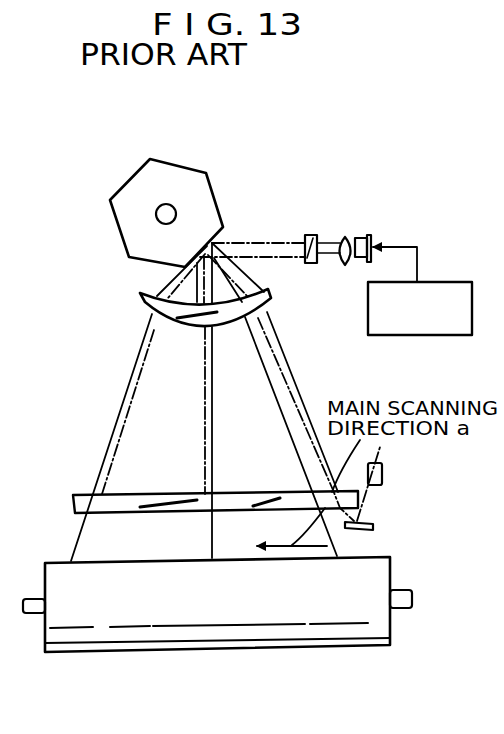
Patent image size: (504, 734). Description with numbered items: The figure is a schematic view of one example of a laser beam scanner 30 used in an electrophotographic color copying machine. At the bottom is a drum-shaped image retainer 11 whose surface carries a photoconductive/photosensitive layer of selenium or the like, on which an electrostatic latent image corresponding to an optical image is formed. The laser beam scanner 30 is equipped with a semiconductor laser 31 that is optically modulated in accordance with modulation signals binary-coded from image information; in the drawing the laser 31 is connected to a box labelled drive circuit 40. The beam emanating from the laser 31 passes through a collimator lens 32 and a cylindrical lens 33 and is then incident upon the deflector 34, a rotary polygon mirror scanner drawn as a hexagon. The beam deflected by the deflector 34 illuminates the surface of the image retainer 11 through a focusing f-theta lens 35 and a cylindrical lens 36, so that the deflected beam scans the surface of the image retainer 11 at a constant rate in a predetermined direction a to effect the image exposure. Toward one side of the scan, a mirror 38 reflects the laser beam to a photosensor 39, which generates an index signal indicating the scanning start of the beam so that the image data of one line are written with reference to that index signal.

The drum-shaped image retainer 11 is at (267, 647).
The laser beam scanner 30 is at (329, 148).
The semiconductor laser 31 is at (367, 235).
The collimator lens 32 is at (345, 237).
The cylindrical lens 33 is at (312, 235).
The deflector 34 is at (210, 180).
The focusing f-theta lens 35 is at (140, 297).
The cylindrical lens 36 is at (85, 495).
The mirror 38 is at (373, 527).
The photosensor 39 is at (383, 473).
The drive circuit 40 is at (450, 282).